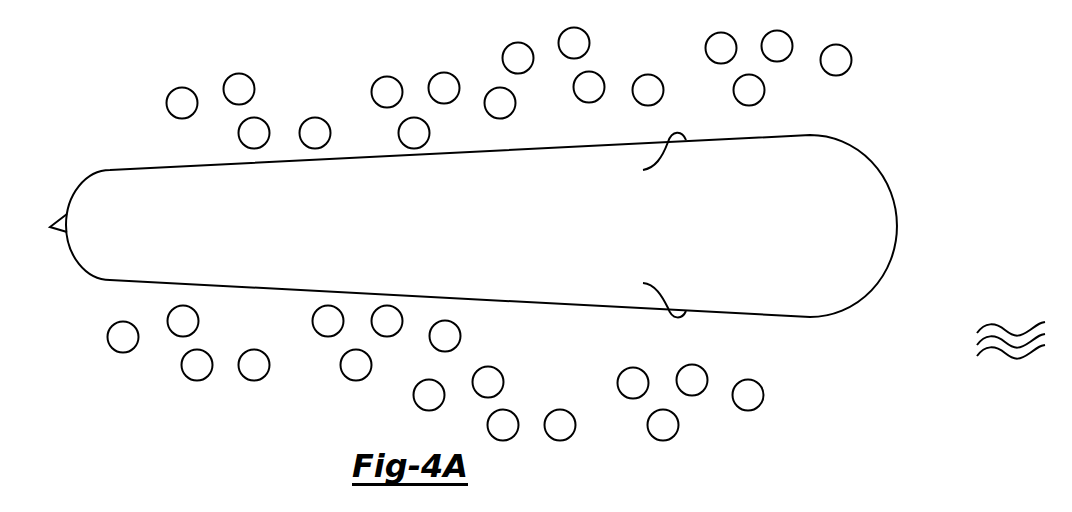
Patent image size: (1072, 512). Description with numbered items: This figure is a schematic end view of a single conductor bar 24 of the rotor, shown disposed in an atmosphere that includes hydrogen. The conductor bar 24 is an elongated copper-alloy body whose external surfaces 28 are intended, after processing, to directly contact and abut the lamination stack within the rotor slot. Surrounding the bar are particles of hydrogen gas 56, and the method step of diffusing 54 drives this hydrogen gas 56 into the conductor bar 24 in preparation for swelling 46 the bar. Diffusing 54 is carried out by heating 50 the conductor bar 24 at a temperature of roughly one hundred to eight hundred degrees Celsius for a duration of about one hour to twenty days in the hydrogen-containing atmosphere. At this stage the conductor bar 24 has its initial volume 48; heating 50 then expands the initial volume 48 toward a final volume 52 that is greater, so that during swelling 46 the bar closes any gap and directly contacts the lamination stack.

The conductor bar 24 is at (848, 144).
The external surfaces 28 is at (57, 229).
The hydrogen gas 56 is at (504, 52).
The heating 50 is at (1018, 326).
The diffusing 54 is at (903, 65).
The initial volume 48 is at (955, 193).
The swelling 46 is at (866, 378).
The final volume 52 is at (990, 508).